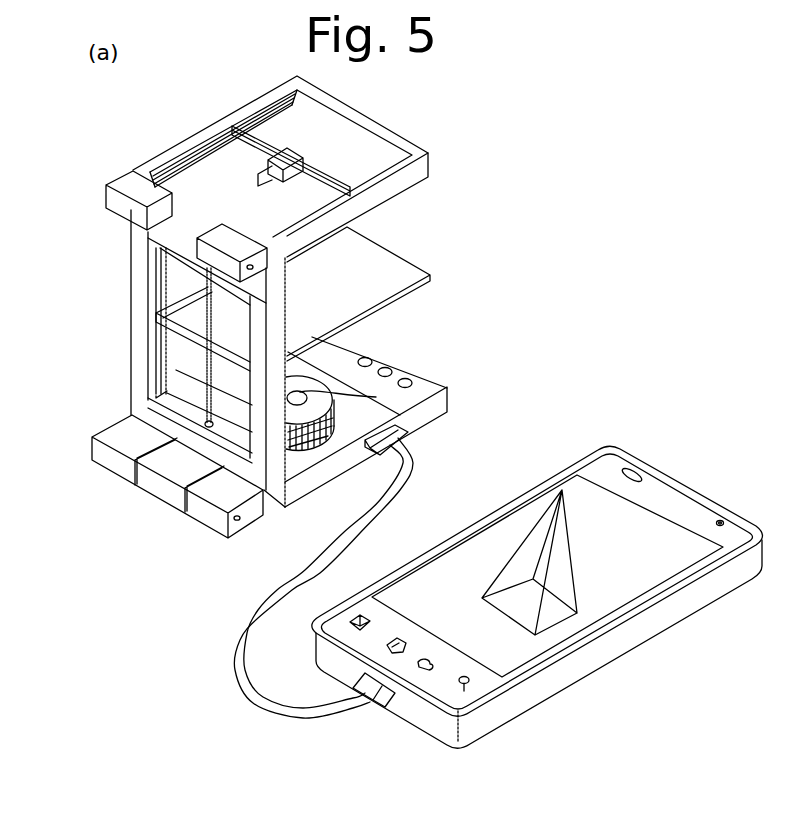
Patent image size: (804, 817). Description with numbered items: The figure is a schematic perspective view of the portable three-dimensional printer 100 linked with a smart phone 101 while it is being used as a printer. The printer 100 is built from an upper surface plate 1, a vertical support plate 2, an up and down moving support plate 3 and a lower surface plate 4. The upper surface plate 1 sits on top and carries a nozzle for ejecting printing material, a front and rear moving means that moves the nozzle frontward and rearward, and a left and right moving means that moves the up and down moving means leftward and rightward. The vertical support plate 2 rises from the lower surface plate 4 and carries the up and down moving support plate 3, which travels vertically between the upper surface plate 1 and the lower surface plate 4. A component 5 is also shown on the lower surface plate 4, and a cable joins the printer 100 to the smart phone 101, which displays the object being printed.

The portable 3D printer 100 is at (150, 141).
The upper surface plate 1 is at (222, 125).
The vertical support plate 2 is at (287, 295).
The up and down moving support plate 3 is at (389, 262).
The lower surface plate 4 is at (323, 468).
The filament spool 5 is at (372, 394).
The mobile terminal 101 is at (620, 458).